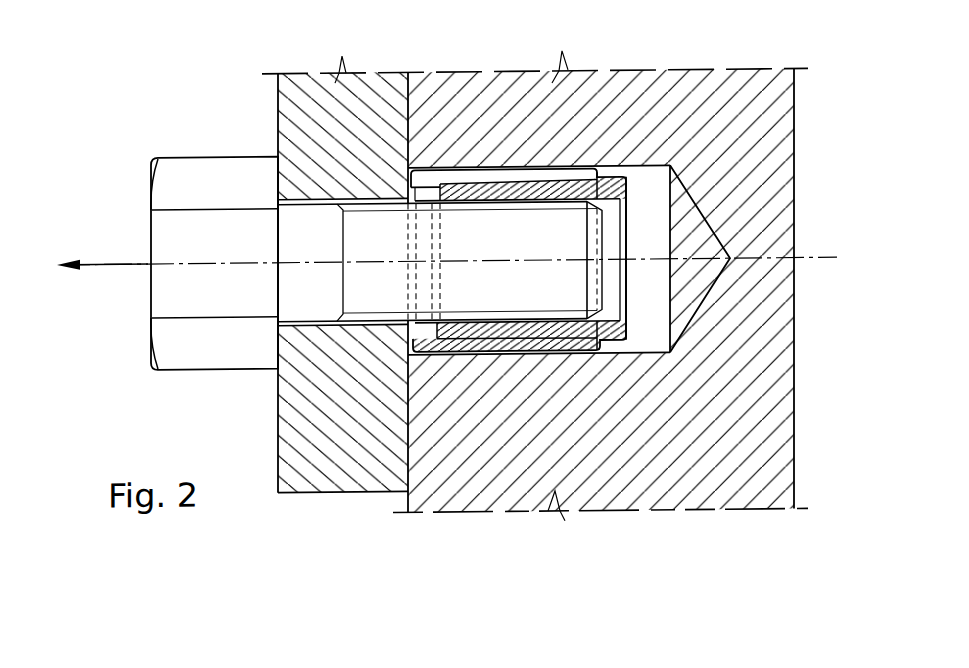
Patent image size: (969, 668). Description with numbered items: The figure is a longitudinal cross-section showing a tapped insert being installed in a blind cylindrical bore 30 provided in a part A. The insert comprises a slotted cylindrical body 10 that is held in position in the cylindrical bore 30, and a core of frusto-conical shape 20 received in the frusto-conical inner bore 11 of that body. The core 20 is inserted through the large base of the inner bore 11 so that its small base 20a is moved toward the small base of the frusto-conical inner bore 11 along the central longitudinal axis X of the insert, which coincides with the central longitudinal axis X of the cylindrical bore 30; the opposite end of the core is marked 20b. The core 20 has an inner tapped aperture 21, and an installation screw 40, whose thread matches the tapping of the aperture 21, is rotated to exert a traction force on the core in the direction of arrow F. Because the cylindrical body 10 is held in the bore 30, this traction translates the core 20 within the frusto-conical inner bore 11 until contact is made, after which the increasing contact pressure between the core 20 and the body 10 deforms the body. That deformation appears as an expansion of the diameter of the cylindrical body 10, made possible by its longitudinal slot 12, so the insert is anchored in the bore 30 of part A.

The cylindrical body 10 is at (430, 330).
The frusto-conical inner bore 11 is at (408, 385).
The longitudinal slot 12 is at (451, 168).
The core of frusto-conical shape 20 is at (582, 169).
The small base of the core 20a is at (624, 176).
The sleeve flange end 20b is at (407, 177).
The inner tapped aperture 21 is at (614, 229).
The cylindrical bore 30 is at (650, 198).
The installation screw 40 is at (298, 311).
The part A is at (537, 73).
The arrow F (direction of traction force) F is at (102, 252).
The central longitudinal axis X is at (819, 262).